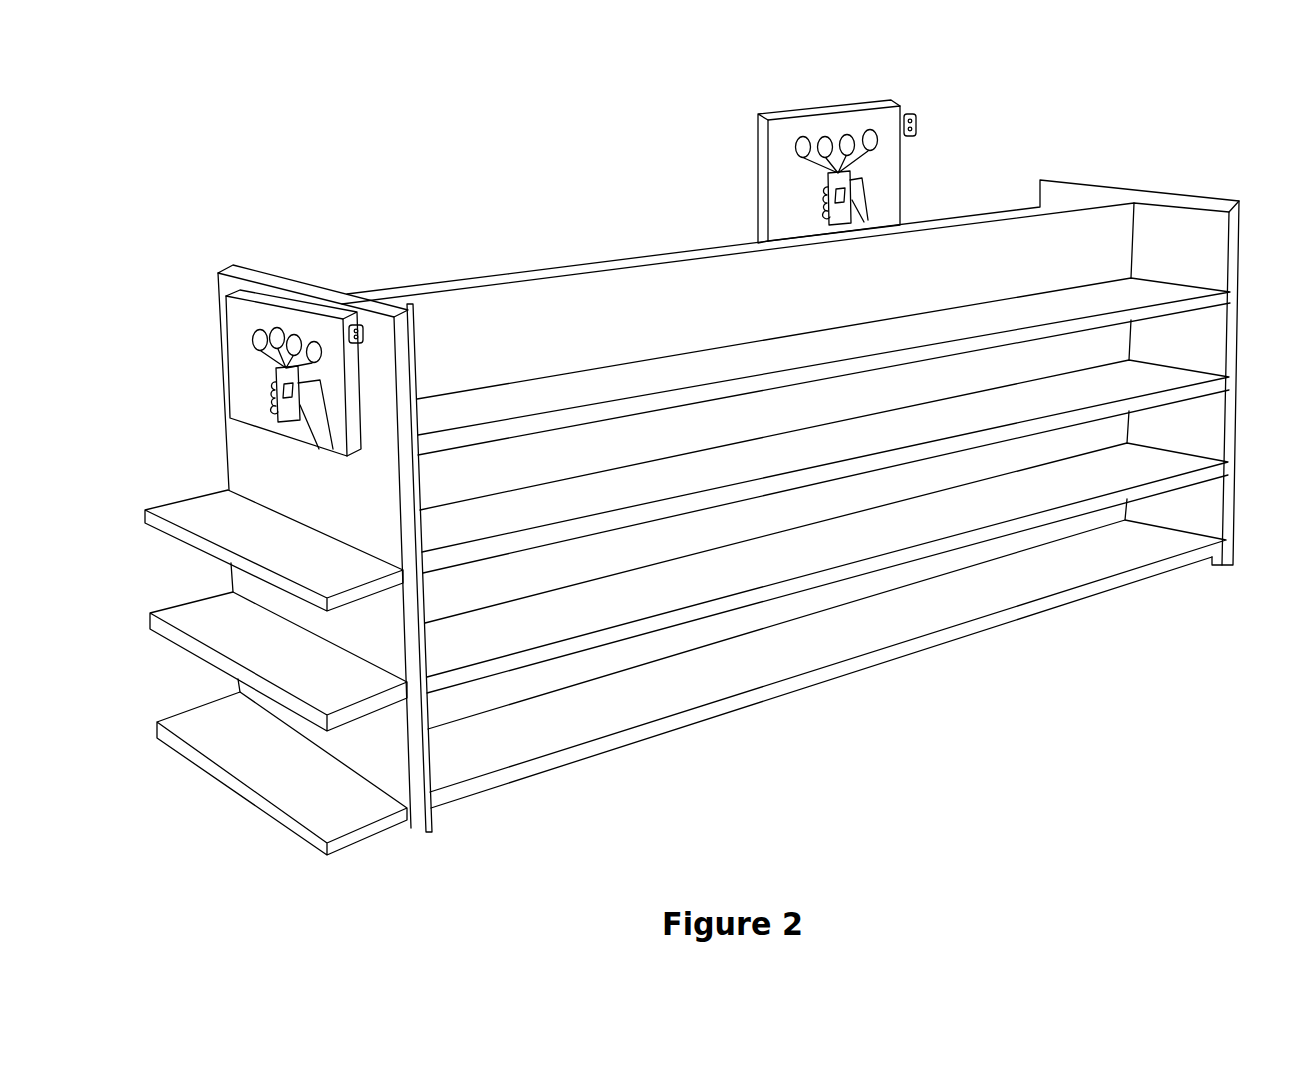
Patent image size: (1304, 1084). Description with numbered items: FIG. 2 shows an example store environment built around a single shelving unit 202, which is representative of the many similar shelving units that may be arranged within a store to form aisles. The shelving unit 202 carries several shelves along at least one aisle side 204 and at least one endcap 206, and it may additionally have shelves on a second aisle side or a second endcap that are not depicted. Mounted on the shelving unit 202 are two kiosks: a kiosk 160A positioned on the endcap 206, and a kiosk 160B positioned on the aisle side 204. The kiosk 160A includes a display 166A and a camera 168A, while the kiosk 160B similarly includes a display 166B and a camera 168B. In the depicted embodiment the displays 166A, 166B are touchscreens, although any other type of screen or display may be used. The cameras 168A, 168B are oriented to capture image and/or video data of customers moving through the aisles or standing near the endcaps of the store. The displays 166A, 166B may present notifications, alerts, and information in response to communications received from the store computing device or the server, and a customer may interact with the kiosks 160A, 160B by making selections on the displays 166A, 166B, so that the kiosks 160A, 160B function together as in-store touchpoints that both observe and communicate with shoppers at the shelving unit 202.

The kiosk 160A is at (280, 437).
The kiosk 160B is at (841, 147).
The display 166A is at (284, 306).
The display 166B is at (766, 163).
The camera 168A is at (424, 271).
The camera 168B is at (943, 80).
The shelving unit 202 is at (876, 667).
The aisle side 204 is at (823, 543).
The endcap 206 is at (276, 672).